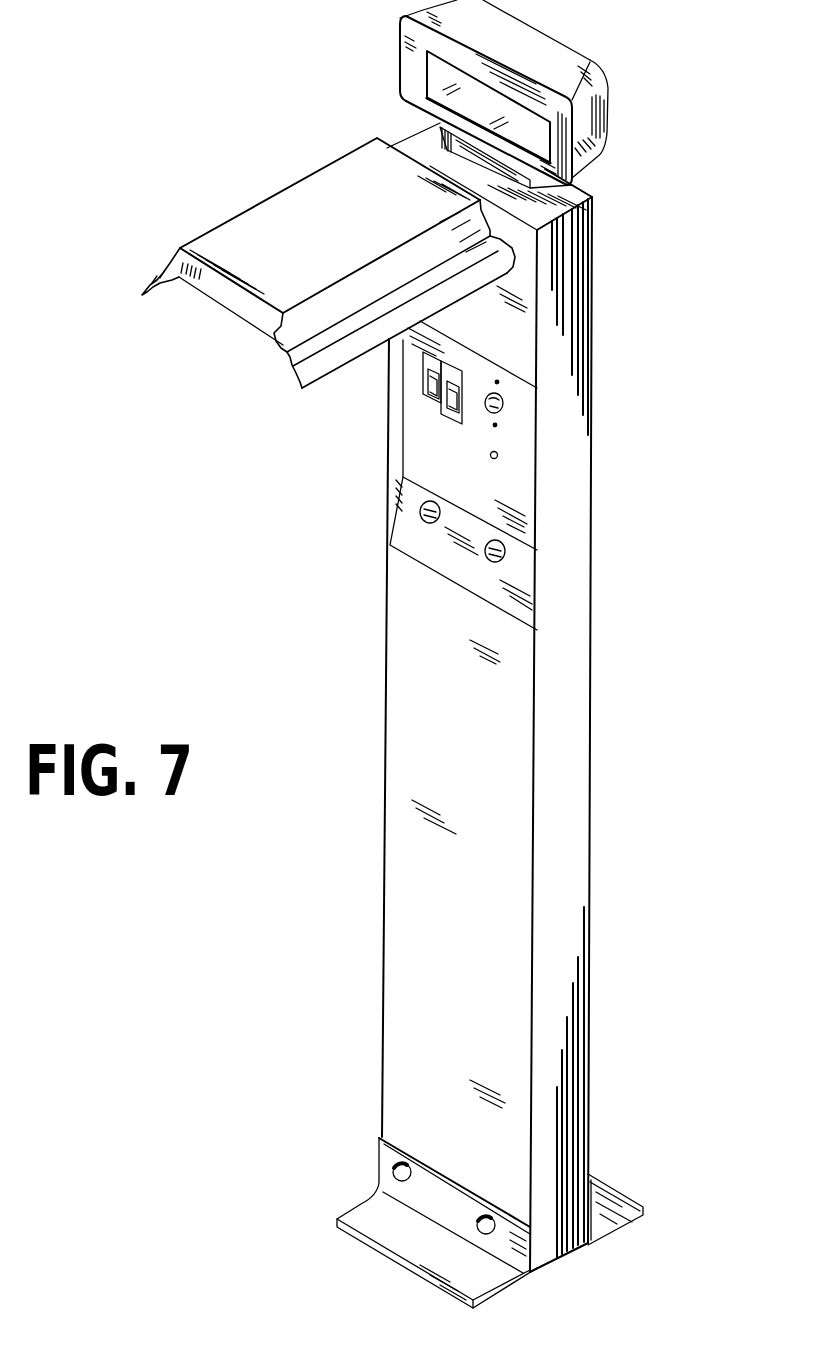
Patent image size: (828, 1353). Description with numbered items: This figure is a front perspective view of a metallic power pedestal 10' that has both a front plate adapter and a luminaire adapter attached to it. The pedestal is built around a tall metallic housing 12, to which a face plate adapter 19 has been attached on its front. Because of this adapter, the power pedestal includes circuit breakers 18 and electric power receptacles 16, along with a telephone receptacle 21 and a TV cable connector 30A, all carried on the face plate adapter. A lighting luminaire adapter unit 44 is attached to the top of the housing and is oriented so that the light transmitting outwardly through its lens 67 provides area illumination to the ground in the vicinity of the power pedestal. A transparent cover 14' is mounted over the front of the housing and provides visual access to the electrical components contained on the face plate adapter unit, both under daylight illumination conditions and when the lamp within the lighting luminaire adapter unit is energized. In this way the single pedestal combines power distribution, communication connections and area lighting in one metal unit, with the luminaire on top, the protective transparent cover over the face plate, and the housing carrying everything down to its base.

The metallic power pedestal 10' is at (435, 654).
The metallic housing 12 is at (591, 829).
The transparent cover 14' is at (328, 252).
The electric power receptacles 16 is at (422, 512).
The circuit breakers 18 is at (423, 392).
The face plate adapter 19 is at (489, 355).
The telephone receptacle 21 is at (503, 410).
The TV cable connector 30A is at (496, 457).
The lighting luminaire adapter unit 44 is at (612, 118).
The lens 67 is at (426, 78).